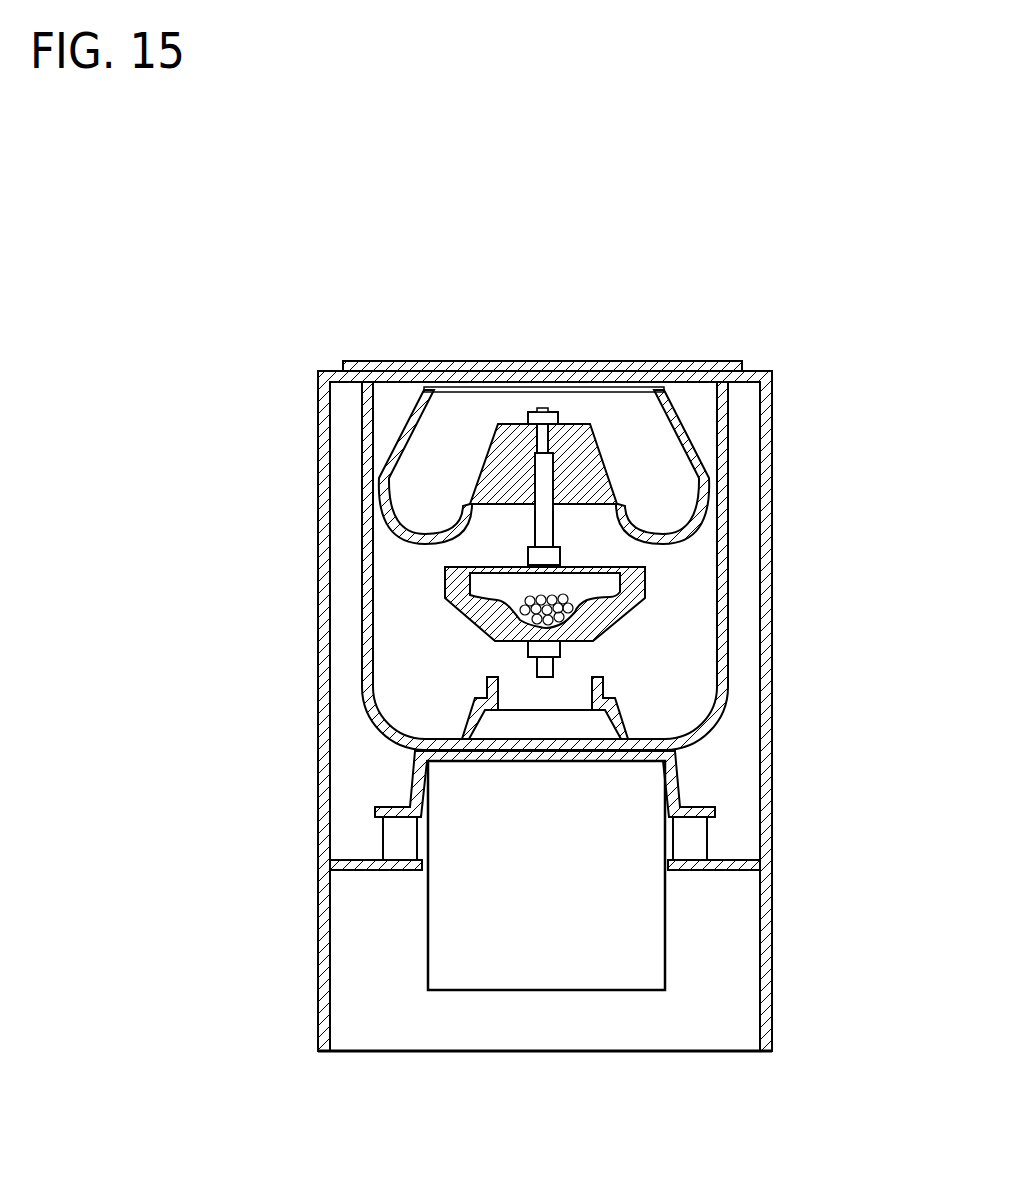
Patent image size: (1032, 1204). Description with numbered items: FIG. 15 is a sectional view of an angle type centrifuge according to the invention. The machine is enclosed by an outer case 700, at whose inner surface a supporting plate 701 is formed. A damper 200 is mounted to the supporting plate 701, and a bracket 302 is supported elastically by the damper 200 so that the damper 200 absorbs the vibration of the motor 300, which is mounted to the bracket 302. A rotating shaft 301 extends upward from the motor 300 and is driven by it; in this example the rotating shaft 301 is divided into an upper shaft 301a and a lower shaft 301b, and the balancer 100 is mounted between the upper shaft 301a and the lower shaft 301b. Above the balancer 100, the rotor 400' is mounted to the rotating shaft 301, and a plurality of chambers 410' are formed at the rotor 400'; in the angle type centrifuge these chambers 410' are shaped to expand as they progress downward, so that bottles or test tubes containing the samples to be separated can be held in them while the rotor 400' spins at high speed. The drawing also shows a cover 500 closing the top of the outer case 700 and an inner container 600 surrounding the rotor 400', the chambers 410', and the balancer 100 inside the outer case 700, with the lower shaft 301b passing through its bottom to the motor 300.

The balancer 100 is at (793, 550).
The damper 200 is at (322, 824).
The motor 300 is at (642, 963).
The rotating shaft 301 is at (344, 542).
The upper shaft 301a is at (340, 566).
The lower shaft 301b is at (542, 662).
The bracket 302 is at (328, 754).
The rotor 400' is at (456, 465).
The chambers 410' is at (410, 455).
The cover 500 is at (703, 362).
The inner container 600 is at (730, 663).
The outer case 700 is at (772, 802).
The supporting plate 701 is at (705, 871).